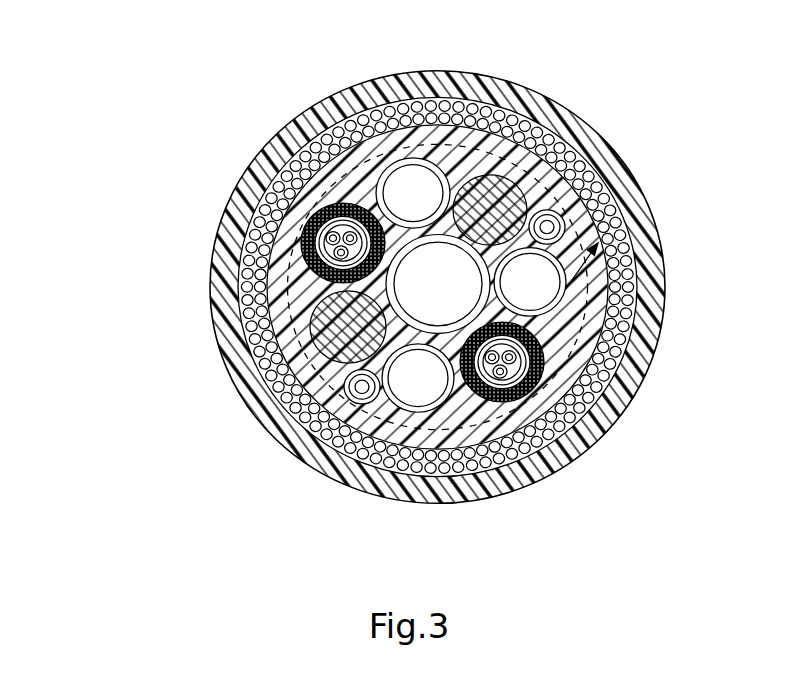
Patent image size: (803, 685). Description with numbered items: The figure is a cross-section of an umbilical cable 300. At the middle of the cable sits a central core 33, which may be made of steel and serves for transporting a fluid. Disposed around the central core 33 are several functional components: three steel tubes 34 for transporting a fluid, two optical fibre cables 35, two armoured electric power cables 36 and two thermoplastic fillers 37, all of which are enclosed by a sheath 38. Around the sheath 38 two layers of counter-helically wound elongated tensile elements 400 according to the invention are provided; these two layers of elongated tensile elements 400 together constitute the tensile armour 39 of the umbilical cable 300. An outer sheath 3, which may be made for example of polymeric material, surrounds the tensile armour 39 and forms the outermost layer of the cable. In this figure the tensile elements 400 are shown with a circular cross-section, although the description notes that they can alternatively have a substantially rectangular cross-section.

The umbilical cable 300 is at (158, 134).
The outer sheath 3 is at (228, 262).
The tensile armour 39 is at (397, 486).
The sheath 38 is at (645, 203).
The central core 33 is at (580, 300).
The steel tubes 34 is at (412, 157).
The thermoplastic fillers 37 is at (493, 171).
The armoured electric power cable 36 is at (310, 210).
The optical fibre cables 35 is at (560, 213).
The elongated tensile elements 400 is at (300, 427).